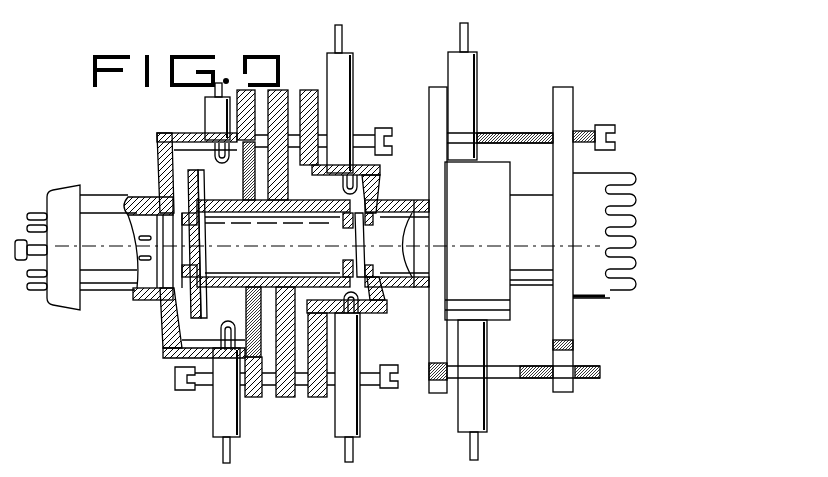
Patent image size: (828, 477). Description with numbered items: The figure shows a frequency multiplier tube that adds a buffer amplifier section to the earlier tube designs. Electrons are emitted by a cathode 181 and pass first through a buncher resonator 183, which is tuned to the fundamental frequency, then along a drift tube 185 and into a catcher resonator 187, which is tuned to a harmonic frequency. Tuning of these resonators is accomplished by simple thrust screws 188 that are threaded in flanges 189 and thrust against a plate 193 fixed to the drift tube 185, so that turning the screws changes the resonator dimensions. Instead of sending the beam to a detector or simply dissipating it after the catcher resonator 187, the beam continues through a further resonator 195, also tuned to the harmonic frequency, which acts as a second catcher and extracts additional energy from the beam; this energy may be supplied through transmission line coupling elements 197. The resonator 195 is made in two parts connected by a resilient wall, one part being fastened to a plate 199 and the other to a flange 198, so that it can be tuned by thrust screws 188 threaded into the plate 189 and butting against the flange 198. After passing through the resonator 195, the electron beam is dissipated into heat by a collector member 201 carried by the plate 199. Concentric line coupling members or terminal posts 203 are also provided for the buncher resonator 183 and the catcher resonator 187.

The cathode 181 is at (143, 195).
The buncher resonator 183 is at (173, 133).
The drift tube 185 is at (252, 272).
The catcher resonator 187 is at (357, 310).
The thrust screws 188 is at (385, 128).
The flange 189 is at (252, 398).
The plate 193 is at (285, 398).
The further resonator 195 is at (488, 167).
The transmission line coupling elements 197 is at (477, 72).
The flange 198 is at (445, 395).
The plate 199 is at (577, 322).
The collector member 201 is at (620, 173).
The concentric line coupling members or terminal posts 203 is at (205, 120).